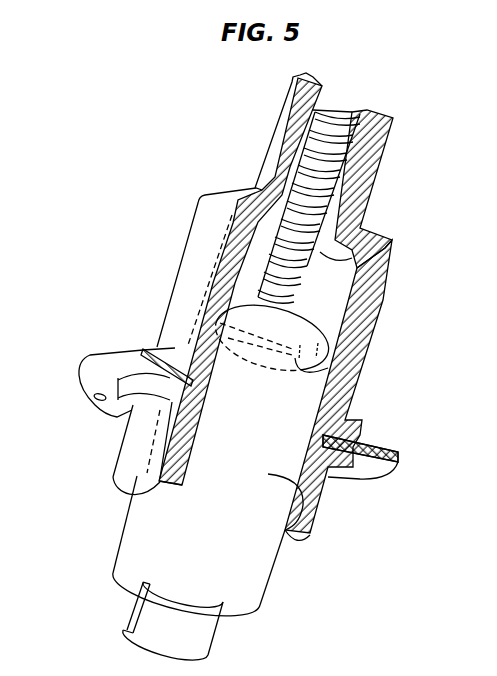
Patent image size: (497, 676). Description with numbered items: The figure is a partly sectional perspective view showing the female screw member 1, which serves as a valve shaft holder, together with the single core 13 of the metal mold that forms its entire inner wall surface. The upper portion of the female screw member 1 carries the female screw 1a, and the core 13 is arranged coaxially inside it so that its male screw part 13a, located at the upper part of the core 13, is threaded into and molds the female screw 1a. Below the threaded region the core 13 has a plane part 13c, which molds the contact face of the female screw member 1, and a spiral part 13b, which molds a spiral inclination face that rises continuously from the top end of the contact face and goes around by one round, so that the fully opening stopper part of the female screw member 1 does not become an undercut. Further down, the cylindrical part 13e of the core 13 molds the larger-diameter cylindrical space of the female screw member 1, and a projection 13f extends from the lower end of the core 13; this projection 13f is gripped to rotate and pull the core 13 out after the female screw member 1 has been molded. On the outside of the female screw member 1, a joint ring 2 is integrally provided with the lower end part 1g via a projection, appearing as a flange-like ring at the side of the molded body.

The female screw member 1 is at (177, 278).
The female screw 1a is at (293, 137).
The lower end part 1g is at (120, 455).
The joint ring 2 is at (97, 354).
The core 13 is at (325, 403).
The male screw part 13a is at (372, 190).
The spiral part 13b is at (318, 332).
The plane part 13c is at (335, 368).
The cylindrical part 13e is at (313, 514).
The projection 13f is at (127, 610).